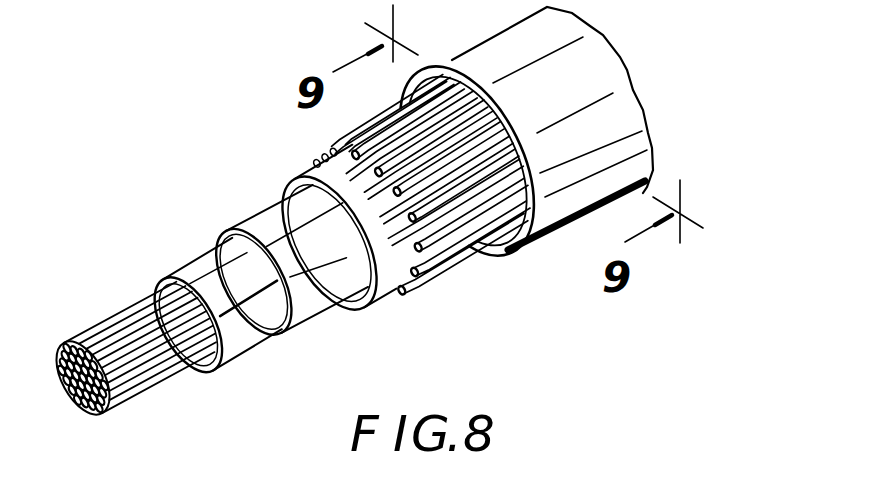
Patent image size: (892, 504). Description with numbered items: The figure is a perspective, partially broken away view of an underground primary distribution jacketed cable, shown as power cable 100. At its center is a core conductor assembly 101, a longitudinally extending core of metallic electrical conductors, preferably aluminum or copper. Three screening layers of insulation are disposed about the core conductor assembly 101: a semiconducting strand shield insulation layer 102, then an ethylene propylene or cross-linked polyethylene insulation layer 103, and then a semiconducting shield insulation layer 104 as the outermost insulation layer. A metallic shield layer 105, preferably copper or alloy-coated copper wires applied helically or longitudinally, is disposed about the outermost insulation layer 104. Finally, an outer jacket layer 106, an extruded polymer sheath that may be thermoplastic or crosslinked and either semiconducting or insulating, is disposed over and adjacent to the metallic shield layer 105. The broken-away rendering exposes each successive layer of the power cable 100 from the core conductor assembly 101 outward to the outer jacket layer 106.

The power cable 100 is at (133, 152).
The core conductor assembly 101 is at (128, 330).
The semiconducting strand shield insulation layer 102 is at (186, 276).
The insulation layer 103 is at (262, 222).
The semiconducting shield insulation layer 104 is at (312, 178).
The metallic shield layer 105 is at (447, 250).
The outer jacket layer 106 is at (620, 75).